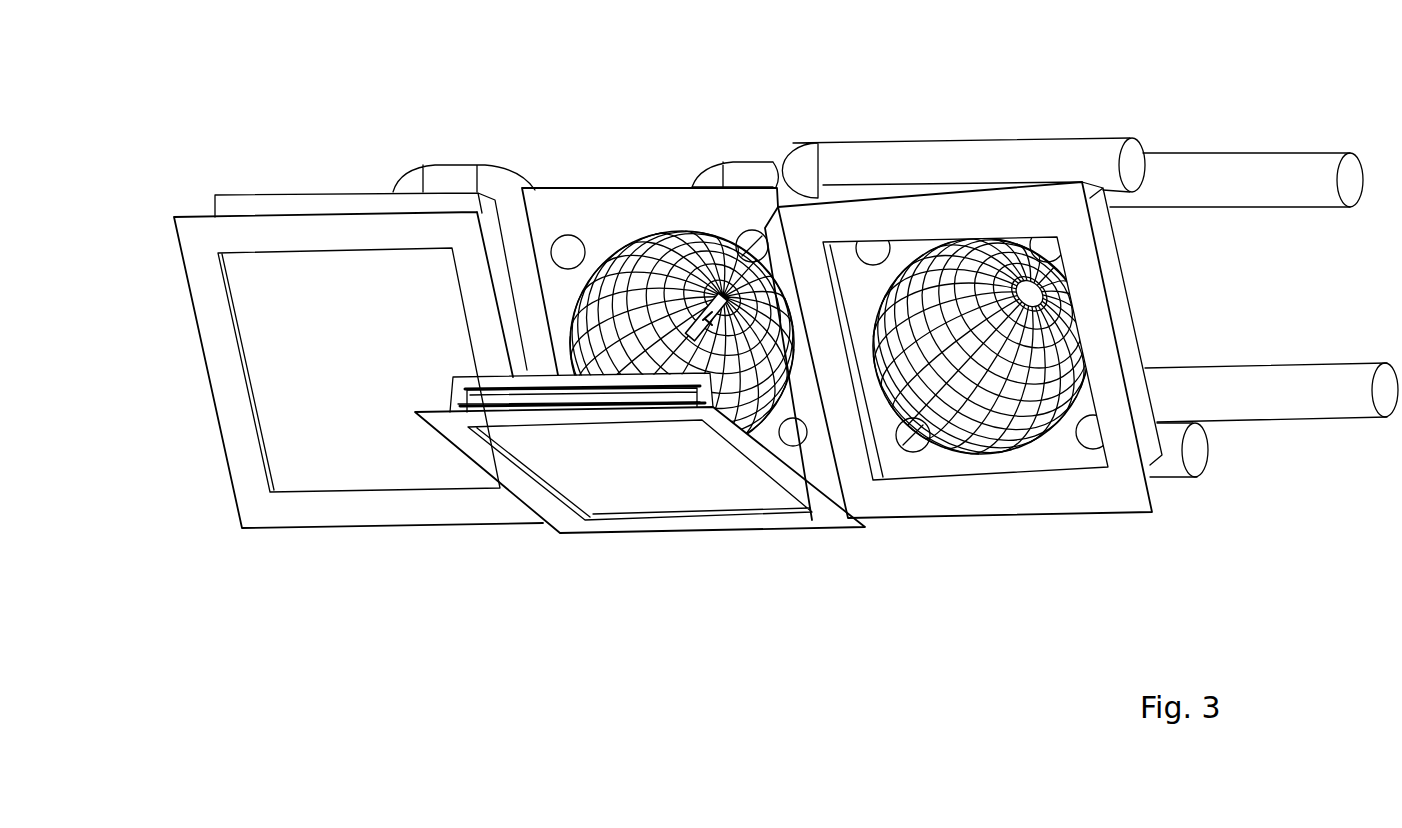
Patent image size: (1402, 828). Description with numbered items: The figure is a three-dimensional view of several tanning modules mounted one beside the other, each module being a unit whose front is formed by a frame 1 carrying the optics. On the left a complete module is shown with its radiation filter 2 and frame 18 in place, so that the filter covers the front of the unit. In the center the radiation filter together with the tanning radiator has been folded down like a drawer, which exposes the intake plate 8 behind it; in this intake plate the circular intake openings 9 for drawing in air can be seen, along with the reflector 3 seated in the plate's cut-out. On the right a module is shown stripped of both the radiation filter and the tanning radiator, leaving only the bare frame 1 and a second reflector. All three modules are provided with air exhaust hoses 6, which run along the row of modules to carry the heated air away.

The frame 1 is at (1128, 300).
The radiation filter 2 is at (362, 448).
The reflector 3 is at (660, 237).
The air exhaust hose 6 is at (1213, 182).
The intake plate 8 is at (610, 203).
The intake openings 9 is at (568, 250).
The frame 18 is at (225, 378).